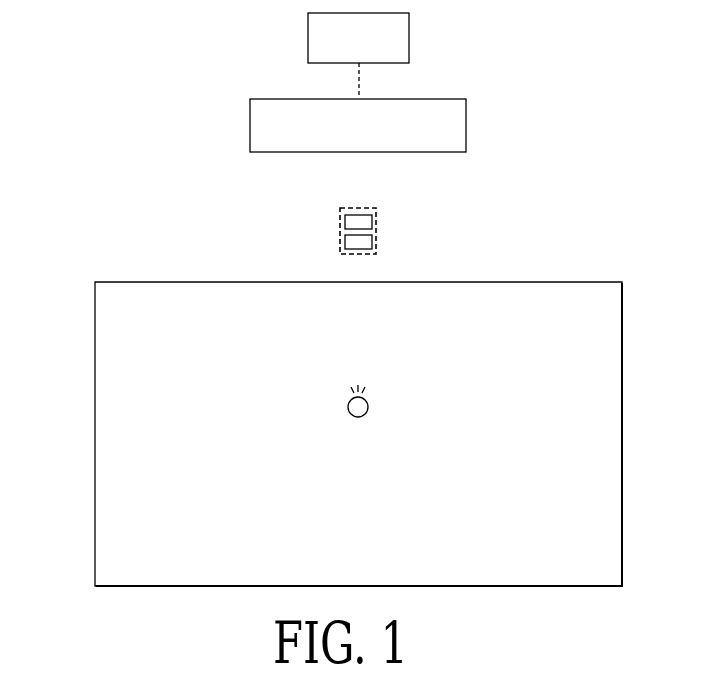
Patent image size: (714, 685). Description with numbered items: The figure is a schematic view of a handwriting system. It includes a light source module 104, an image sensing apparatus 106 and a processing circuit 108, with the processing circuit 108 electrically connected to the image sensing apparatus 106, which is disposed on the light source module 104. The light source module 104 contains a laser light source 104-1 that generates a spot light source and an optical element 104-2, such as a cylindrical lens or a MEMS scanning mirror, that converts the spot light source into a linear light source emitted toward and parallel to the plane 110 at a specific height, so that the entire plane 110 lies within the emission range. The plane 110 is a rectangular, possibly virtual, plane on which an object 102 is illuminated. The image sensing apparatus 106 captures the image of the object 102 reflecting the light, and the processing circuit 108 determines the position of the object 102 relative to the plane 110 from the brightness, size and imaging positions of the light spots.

The processing circuit 108 is at (308, 36).
The image sensing apparatus 106 is at (250, 127).
The light source module 104 is at (340, 223).
The laser light source 104-1 is at (372, 223).
The optical element 104-2 is at (372, 242).
The plane 110 is at (110, 464).
The object 102 is at (358, 417).